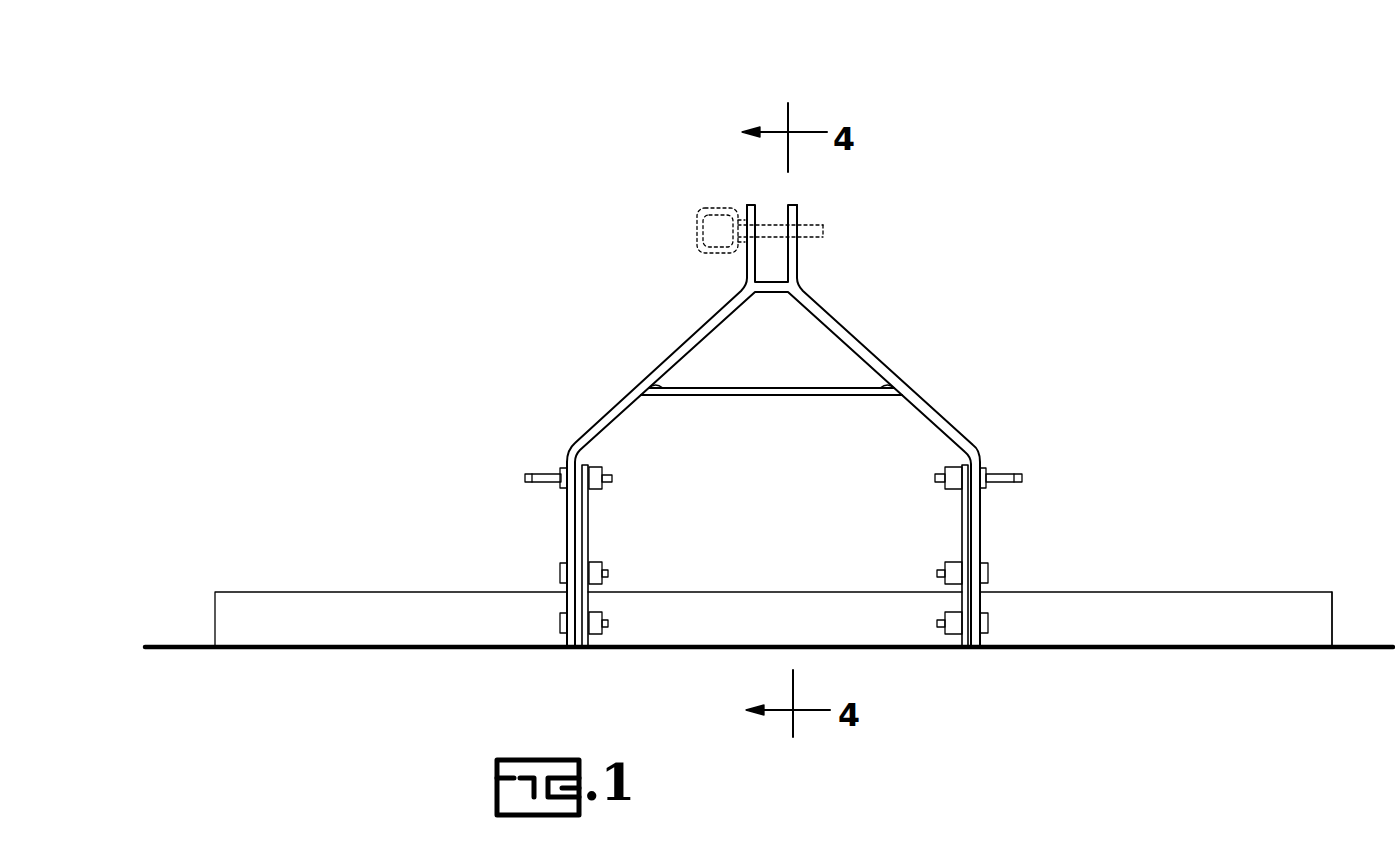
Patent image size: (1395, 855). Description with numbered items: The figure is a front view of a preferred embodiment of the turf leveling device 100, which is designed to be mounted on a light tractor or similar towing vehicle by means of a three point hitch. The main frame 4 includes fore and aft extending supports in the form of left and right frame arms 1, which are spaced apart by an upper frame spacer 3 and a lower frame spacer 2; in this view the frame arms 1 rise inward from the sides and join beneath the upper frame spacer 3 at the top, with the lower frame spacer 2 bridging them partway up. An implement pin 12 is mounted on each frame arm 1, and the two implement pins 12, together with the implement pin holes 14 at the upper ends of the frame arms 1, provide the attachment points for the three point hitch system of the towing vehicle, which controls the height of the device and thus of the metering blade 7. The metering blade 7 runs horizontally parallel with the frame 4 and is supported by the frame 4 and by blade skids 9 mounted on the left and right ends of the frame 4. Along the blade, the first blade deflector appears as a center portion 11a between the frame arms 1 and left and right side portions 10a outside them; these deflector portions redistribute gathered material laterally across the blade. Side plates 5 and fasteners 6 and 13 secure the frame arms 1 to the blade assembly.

The turf leveling device 100 is at (558, 366).
The frame arms 1 is at (856, 345).
The lower frame spacer 2 is at (871, 387).
The upper frame spacer 3 is at (781, 283).
The main frame 4 is at (966, 560).
The left side plate 5 is at (591, 520).
The upper bolt 6 is at (586, 458).
The metering blade 7 is at (1197, 645).
The blade skids 9 is at (1355, 645).
The side portions of first blade deflector 10a is at (340, 612).
The center portion of first blade deflector 11a is at (642, 602).
The implement pin 12 is at (1010, 474).
The lower bolts 13 is at (562, 624).
The implement pin holes 14 is at (791, 258).